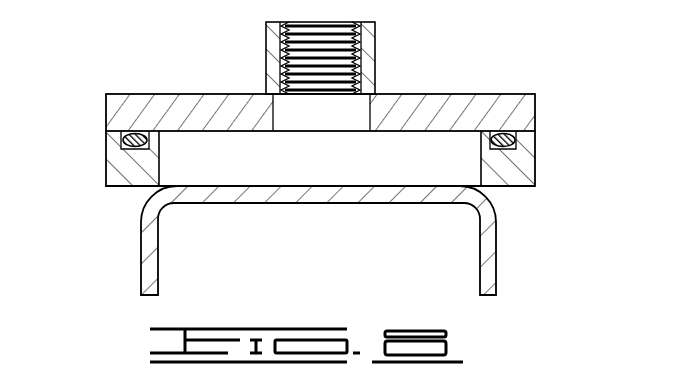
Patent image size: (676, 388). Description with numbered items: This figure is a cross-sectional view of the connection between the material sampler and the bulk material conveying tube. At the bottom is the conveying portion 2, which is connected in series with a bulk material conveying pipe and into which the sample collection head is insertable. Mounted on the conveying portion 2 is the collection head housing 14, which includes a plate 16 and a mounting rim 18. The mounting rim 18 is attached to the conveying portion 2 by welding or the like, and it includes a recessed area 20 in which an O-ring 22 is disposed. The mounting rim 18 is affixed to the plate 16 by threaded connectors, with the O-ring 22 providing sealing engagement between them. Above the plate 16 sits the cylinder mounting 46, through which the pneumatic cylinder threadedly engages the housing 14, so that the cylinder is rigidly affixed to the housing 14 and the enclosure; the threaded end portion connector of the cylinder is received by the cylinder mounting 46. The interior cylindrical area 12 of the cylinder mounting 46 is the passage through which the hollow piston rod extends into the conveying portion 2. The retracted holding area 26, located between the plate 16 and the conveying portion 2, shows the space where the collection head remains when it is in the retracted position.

The collection head housing 14 is at (88, 54).
The cylinder mounting 46 is at (276, 42).
The interior cylindrical area 12 is at (349, 115).
The plate 16 is at (346, 95).
The mounting rim 18 is at (317, 156).
The recessed area 20 is at (125, 143).
The O-ring 22 is at (122, 137).
The retracted holding area 26 is at (441, 166).
The conveying portion 2 is at (141, 247).